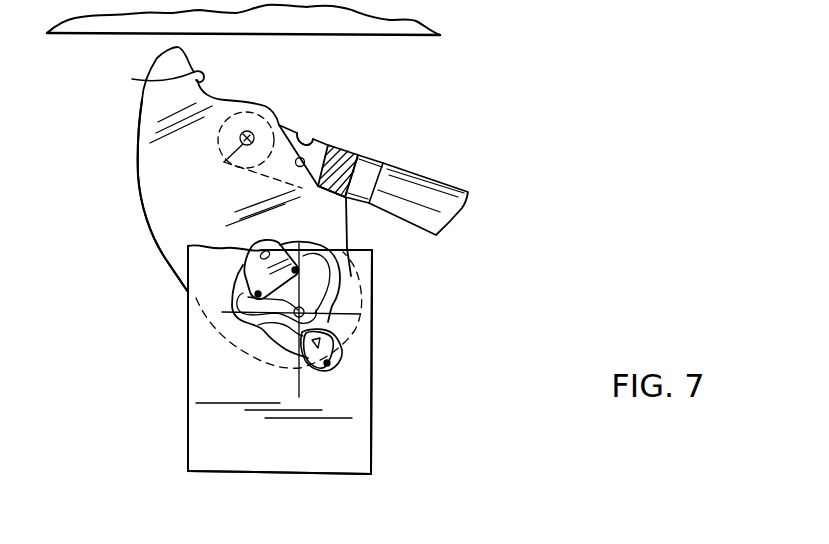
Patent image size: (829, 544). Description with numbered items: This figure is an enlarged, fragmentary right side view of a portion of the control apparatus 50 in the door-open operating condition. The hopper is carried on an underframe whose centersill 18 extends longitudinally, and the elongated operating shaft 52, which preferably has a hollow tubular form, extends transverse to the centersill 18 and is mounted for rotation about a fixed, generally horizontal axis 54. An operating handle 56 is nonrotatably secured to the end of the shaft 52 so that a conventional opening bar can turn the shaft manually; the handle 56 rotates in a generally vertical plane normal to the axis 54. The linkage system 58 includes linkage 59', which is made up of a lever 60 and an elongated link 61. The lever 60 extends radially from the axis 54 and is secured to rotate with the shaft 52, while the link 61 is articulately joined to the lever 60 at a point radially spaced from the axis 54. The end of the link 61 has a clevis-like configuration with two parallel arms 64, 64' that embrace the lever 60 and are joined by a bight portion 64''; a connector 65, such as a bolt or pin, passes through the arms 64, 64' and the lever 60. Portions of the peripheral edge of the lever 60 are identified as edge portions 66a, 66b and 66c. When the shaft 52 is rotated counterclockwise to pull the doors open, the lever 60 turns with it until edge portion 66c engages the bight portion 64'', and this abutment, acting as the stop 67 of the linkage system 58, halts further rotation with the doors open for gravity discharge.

The centersill 18 is at (417, 32).
The control apparatus 50 is at (143, 352).
The operating shaft 52 is at (280, 358).
The axis 54 is at (322, 326).
The operating handle 56 is at (345, 380).
The linkage system 58 is at (136, 221).
The linkage 59' is at (136, 358).
The lever 60 is at (160, 231).
The link 61 is at (430, 234).
The arm 64 is at (300, 123).
The arm 64' is at (341, 104).
The bight portion 64'' is at (380, 149).
The connector 65 is at (236, 168).
The edge portion 66a is at (140, 75).
The edge portion 66b is at (295, 158).
The edge portion 66c is at (319, 185).
The stop 67 is at (356, 226).